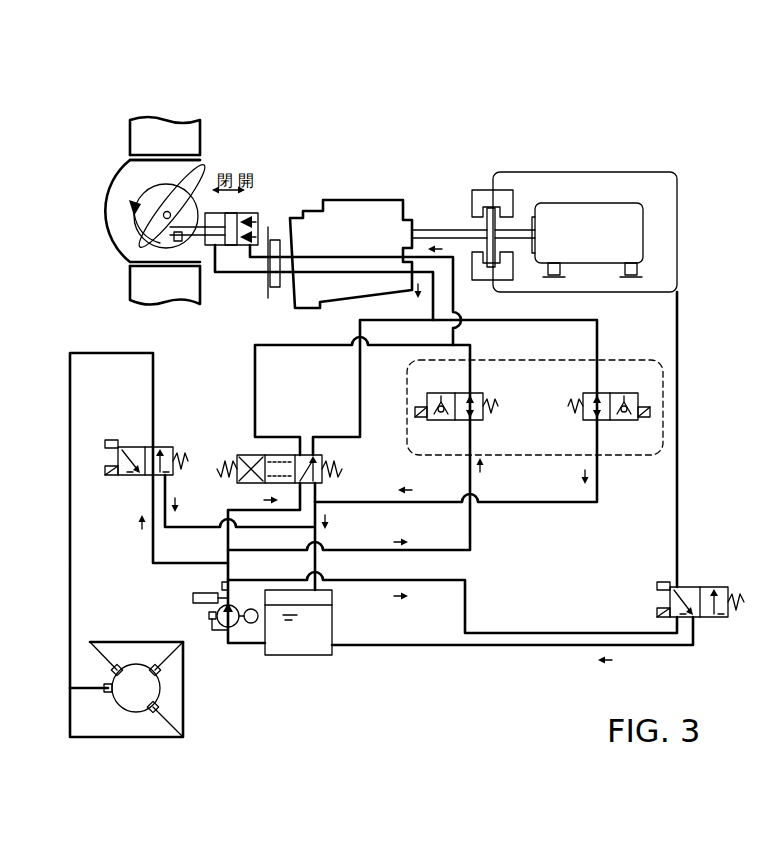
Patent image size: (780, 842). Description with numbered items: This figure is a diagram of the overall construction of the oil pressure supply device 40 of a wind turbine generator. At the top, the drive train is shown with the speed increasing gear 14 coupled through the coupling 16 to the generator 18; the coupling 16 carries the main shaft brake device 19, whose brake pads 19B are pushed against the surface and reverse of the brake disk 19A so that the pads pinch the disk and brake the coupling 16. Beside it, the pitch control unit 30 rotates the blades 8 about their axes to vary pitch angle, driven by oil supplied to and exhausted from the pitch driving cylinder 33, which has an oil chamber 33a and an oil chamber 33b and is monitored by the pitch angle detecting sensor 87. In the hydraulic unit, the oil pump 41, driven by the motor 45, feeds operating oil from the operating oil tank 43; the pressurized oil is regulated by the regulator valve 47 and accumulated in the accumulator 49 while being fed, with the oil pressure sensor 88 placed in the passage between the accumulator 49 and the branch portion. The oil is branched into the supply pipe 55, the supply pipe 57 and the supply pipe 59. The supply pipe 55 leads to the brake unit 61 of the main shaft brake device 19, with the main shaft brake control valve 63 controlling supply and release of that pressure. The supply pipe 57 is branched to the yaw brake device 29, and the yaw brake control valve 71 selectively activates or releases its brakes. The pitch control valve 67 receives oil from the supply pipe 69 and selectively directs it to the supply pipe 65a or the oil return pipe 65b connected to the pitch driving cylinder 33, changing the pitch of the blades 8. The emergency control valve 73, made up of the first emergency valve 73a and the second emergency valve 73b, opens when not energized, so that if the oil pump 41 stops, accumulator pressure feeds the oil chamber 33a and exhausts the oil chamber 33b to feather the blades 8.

The blades 8 is at (176, 122).
The speed increasing gear 14 is at (354, 200).
The coupling 16 is at (437, 228).
The generator 18 is at (616, 202).
The main shaft brake device 19 is at (522, 164).
The brake disk 19A is at (480, 227).
The brake pads 19B is at (483, 190).
The yaw brake device 29 is at (150, 708).
The pitch control unit 30 is at (236, 276).
The pitch driving cylinder 33 is at (254, 208).
The oil chamber 33a is at (262, 210).
The oil chamber 33b is at (207, 250).
The oil pressure supply device 40 is at (692, 386).
The oil pump 41 is at (228, 629).
The operating oil tank 43 is at (312, 656).
The motor 45 is at (252, 625).
The regulator valve 47 is at (207, 615).
The accumulator 49 is at (193, 598).
The supply pipe 55 is at (431, 582).
The supply pipe 57 is at (149, 545).
The supply pipe 59 is at (358, 550).
The brake unit 61 is at (522, 199).
The main shaft brake control valve 63 is at (720, 586).
The supply pipe 65a is at (466, 320).
The oil return pipe 65b is at (431, 313).
The pitch control valve 67 is at (348, 476).
The supply pipe 69 is at (282, 438).
The yaw brake control valve 71 is at (128, 478).
The emergency control valve 73 is at (647, 358).
The first emergency valve 73a is at (491, 398).
The second emergency valve 73b is at (582, 418).
The pitch angle detecting sensor 87 is at (181, 249).
The oil pressure sensor 88 is at (221, 585).